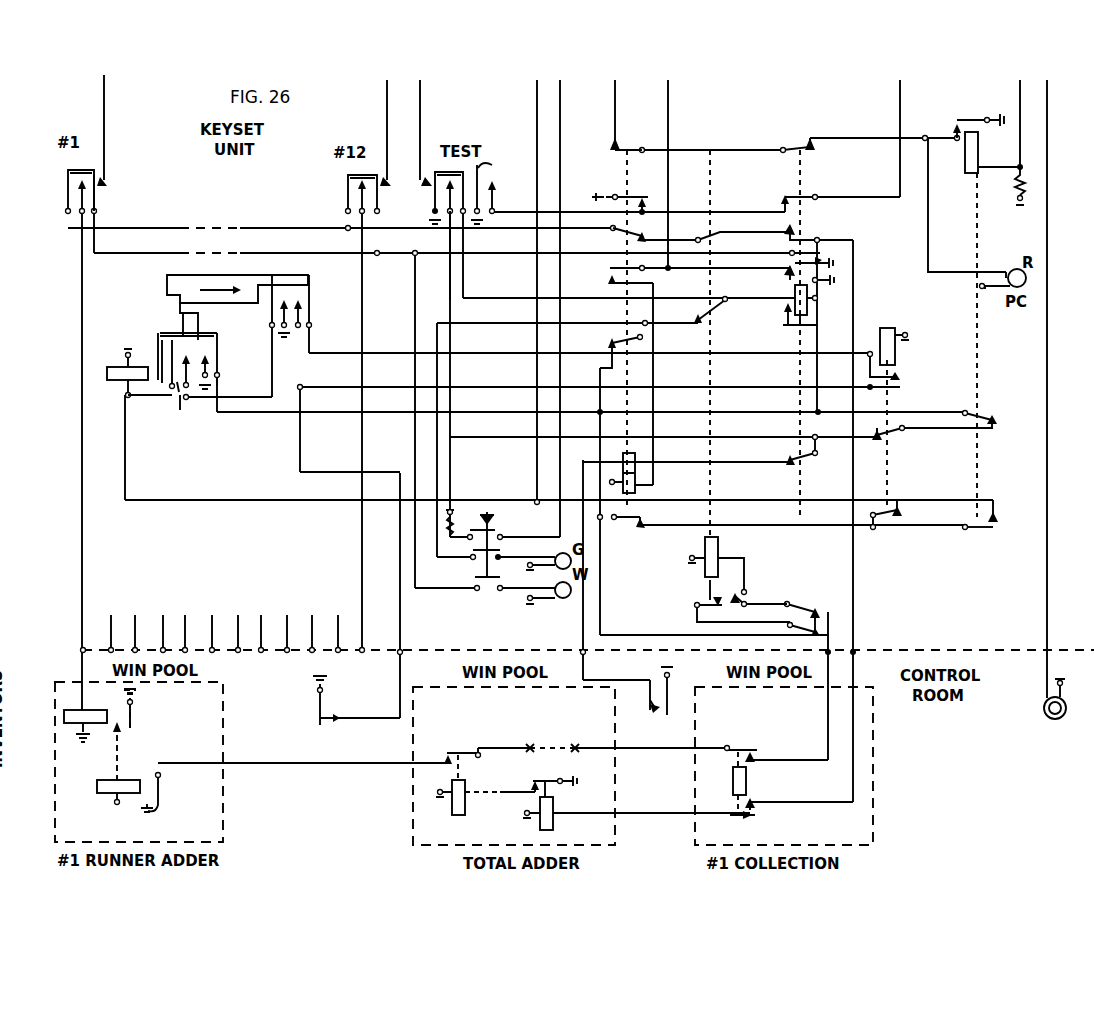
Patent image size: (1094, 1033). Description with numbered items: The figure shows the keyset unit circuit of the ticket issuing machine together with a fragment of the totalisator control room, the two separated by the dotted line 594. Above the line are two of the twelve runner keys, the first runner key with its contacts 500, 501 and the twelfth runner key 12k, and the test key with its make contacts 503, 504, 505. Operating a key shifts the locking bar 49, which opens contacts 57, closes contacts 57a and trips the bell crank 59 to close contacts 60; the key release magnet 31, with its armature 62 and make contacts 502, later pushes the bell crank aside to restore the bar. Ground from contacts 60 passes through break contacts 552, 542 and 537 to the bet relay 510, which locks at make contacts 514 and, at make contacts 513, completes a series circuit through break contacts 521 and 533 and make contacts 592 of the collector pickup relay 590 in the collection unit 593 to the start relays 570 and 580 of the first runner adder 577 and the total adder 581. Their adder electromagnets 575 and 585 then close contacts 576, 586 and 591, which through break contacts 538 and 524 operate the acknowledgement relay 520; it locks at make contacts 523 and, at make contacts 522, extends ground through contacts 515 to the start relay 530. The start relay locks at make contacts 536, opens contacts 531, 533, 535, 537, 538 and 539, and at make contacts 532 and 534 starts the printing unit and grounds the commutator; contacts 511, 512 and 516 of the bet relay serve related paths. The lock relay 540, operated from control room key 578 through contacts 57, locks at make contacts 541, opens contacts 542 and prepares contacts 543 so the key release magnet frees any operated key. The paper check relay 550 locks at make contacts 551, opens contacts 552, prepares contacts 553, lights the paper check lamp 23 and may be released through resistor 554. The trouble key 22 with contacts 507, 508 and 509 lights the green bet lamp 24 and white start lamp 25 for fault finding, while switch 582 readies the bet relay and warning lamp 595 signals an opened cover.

The key contacts 500 is at (64, 182).
The key contacts 501 is at (96, 188).
The keyset #12 switch 12k is at (363, 194).
The make contacts 503 is at (433, 190).
The make contacts 504 is at (455, 205).
The make contacts 505 is at (488, 180).
The locking bar 49 is at (165, 290).
The bell crank 59 is at (178, 312).
The armature 62 is at (160, 328).
The contacts 60 is at (219, 352).
The contacts 57a is at (270, 320).
The contacts 57 is at (310, 322).
The key release magnet 31 is at (112, 364).
The make contacts 502 is at (184, 405).
The contacts 511 is at (608, 142).
The make contacts 512 is at (652, 200).
The make contacts 513 is at (630, 236).
The make contacts 514 is at (606, 281).
The make contacts 515 is at (609, 340).
The break contacts 516 is at (646, 520).
The break contacts 521 is at (718, 236).
The make contacts 522 is at (692, 316).
The bet relay 510 is at (640, 490).
The break contacts 531 is at (803, 140).
The make contacts 532 is at (778, 203).
The break contacts 533 is at (800, 240).
The make contacts 534 is at (830, 260).
The break contacts 535 is at (782, 280).
The make contacts 536 is at (784, 318).
The start relay 530 is at (808, 310).
The break contacts 537 is at (798, 463).
The break contacts 538 is at (824, 610).
The break contacts 539 is at (785, 632).
The lock relay 540 is at (906, 346).
The make contacts 541 is at (903, 381).
The contacts 542 is at (892, 436).
The make contacts 543 is at (902, 514).
The break contacts 552 is at (1000, 418).
The make contacts 553 is at (996, 518).
The paper check relay 550 is at (965, 160).
The make contacts 551 is at (948, 130).
The resistor 554 is at (1016, 186).
The paper check lamp 23 is at (1015, 269).
The trouble key 22 is at (488, 510).
The upper contacts 507 is at (500, 529).
The contacts 508 is at (500, 553).
The contacts 509 is at (474, 577).
The green bet lamp 24 is at (548, 567).
The white start lamp 25 is at (560, 602).
The acknowledgement relay 520 is at (720, 550).
The make contacts 523 is at (710, 597).
The break contacts 524 is at (745, 600).
The #1 runner adder 577 is at (222, 800).
The start relay 570 is at (97, 725).
The adder electromagnet 575 is at (100, 747).
The make contacts 576 is at (160, 808).
The key 578 is at (325, 722).
The total adder 581 is at (413, 819).
The make contacts 586 is at (434, 755).
The adder electromagnet 585 is at (462, 786).
The start relay 580 is at (555, 803).
The switch 582 is at (658, 718).
The #1 collection unit 593 is at (873, 822).
The make contacts 591 is at (758, 750).
The collector pickup relay 590 is at (747, 778).
The make contacts 592 is at (757, 815).
The dotted line 594 is at (945, 652).
The warning lamp 595 is at (1044, 715).